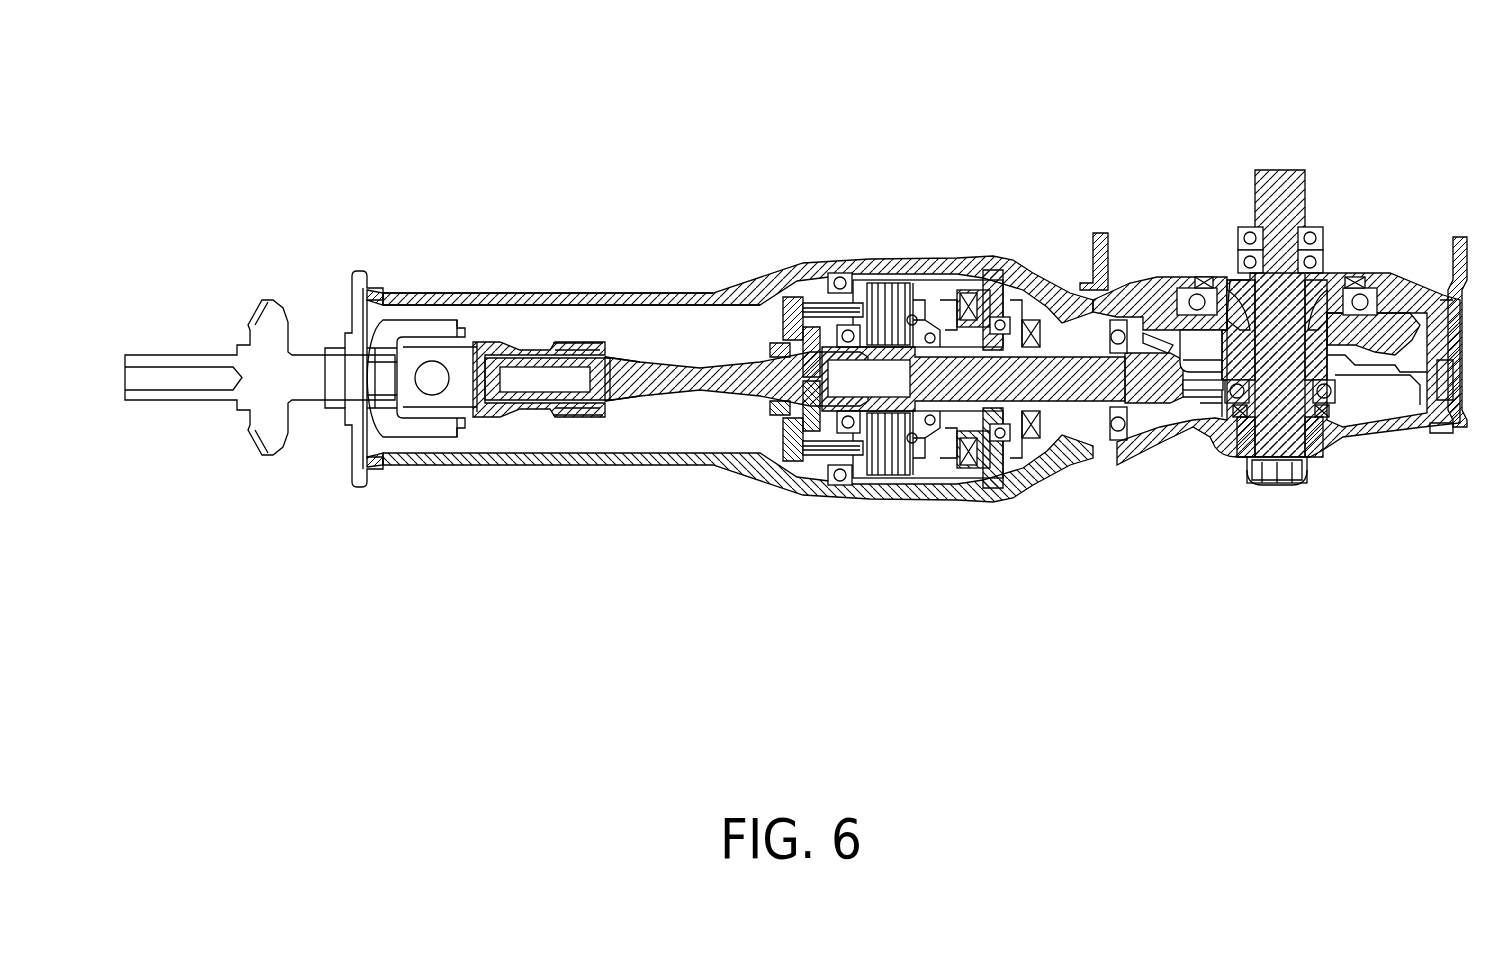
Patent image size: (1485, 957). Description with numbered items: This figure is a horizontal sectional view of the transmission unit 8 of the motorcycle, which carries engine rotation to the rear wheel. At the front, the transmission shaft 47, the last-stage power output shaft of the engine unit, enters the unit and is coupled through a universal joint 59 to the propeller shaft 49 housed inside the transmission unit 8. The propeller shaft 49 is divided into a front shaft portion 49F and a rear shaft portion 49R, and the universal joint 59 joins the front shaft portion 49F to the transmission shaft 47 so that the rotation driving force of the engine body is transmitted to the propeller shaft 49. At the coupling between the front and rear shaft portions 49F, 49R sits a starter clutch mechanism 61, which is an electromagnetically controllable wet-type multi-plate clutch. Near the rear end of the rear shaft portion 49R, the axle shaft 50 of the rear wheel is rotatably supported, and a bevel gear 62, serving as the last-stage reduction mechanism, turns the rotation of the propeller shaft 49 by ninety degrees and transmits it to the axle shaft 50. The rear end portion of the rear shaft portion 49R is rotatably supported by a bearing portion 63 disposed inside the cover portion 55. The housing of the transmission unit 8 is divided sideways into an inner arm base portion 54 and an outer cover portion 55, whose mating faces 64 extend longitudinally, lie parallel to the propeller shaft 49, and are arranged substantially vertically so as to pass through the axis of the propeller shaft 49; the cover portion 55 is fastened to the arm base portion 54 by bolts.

The transmission unit 8 is at (773, 168).
The transmission shaft 47 is at (243, 398).
The propeller shaft 49 is at (764, 608).
The front shaft portion 49F is at (658, 395).
The rear shaft portion 49R is at (1053, 398).
The axle shaft 50 is at (1323, 278).
The arm base portion 54 is at (548, 292).
The cover portion 55 is at (558, 466).
The universal joint 59 is at (400, 430).
The starter clutch mechanism 61 is at (921, 273).
The bevel gear 62 is at (1150, 308).
The bearing portion 63 is at (1213, 412).
The mating faces 64 is at (1388, 425).